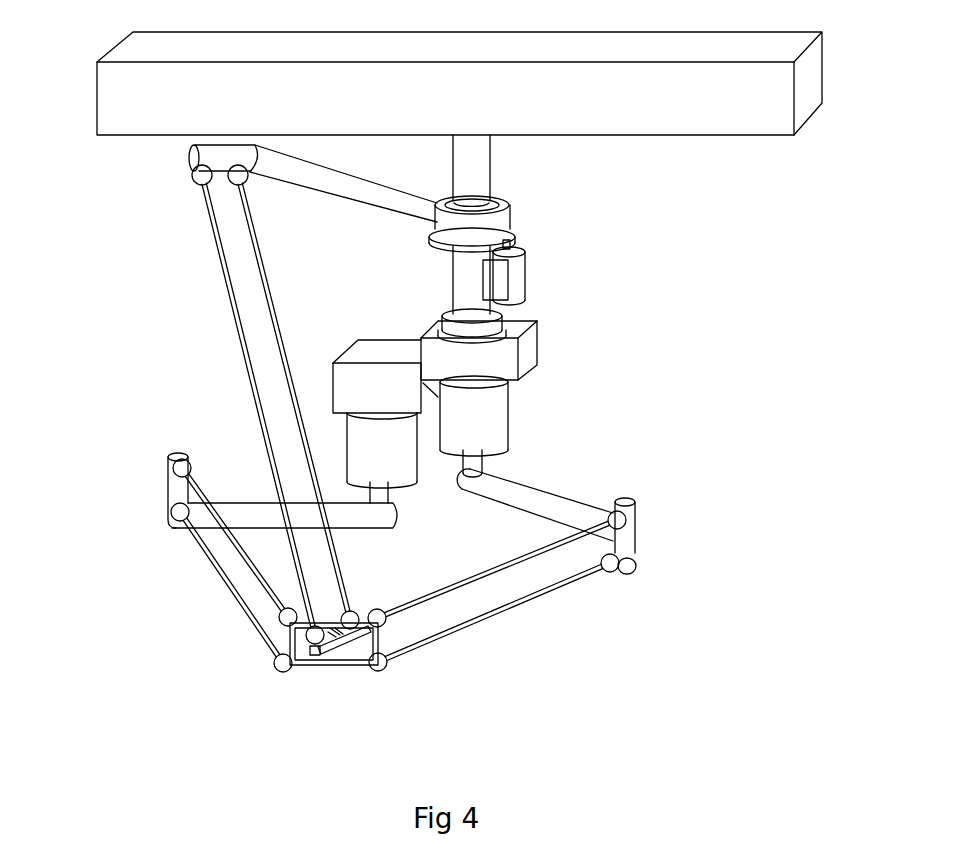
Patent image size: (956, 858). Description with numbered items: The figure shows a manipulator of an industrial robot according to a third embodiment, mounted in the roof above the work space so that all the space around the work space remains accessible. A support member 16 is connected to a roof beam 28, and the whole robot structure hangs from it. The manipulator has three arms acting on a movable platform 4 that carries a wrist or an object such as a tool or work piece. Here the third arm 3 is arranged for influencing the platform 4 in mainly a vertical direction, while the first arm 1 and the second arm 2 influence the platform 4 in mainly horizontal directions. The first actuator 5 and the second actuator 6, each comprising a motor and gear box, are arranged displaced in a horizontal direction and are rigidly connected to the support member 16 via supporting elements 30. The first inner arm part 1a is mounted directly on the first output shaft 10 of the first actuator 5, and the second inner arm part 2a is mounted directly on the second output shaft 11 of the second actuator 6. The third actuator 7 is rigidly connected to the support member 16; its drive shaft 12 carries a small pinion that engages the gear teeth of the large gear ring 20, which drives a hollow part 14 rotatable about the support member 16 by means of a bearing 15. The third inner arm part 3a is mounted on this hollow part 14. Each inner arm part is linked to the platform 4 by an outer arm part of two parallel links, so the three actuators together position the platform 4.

The first arm 1 is at (584, 510).
The first inner arm part 1a is at (540, 513).
The second arm 2 is at (241, 539).
The second inner arm part 2a is at (257, 518).
The third arm 3 is at (265, 200).
The third inner arm part 3a is at (338, 186).
The movable platform 4 is at (333, 657).
The first actuator 5 is at (457, 427).
The second actuator 6 is at (350, 440).
The third actuator 7 is at (522, 276).
The first output shaft 10 is at (472, 467).
The second output shaft 11 is at (350, 488).
The third output shaft 12 is at (518, 246).
The hollow part 14 is at (506, 200).
The bearing 15 is at (497, 196).
The support member 16 is at (460, 165).
The gear ring 20 is at (512, 237).
The roof beam 28 is at (745, 112).
The supporting elements 30 is at (427, 327).